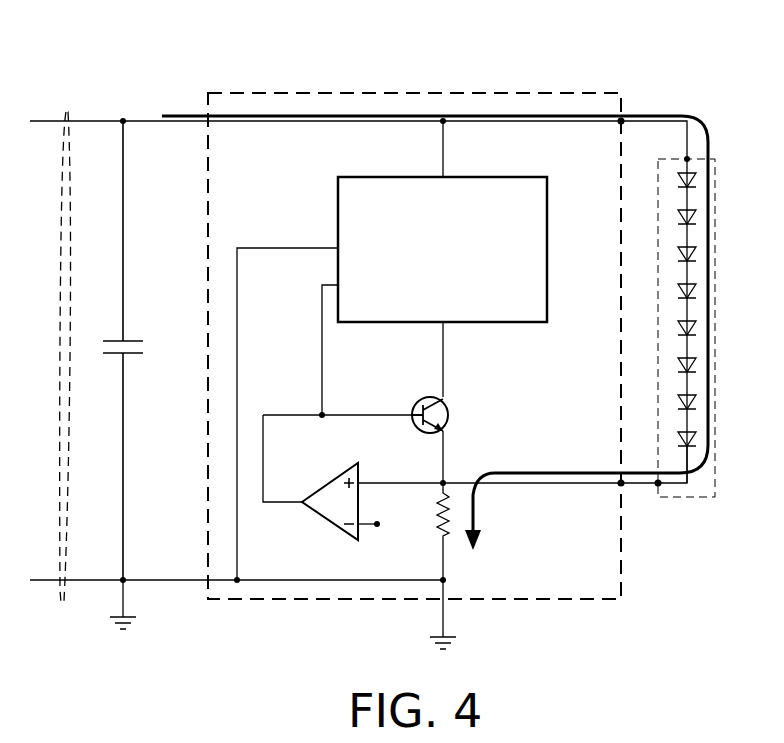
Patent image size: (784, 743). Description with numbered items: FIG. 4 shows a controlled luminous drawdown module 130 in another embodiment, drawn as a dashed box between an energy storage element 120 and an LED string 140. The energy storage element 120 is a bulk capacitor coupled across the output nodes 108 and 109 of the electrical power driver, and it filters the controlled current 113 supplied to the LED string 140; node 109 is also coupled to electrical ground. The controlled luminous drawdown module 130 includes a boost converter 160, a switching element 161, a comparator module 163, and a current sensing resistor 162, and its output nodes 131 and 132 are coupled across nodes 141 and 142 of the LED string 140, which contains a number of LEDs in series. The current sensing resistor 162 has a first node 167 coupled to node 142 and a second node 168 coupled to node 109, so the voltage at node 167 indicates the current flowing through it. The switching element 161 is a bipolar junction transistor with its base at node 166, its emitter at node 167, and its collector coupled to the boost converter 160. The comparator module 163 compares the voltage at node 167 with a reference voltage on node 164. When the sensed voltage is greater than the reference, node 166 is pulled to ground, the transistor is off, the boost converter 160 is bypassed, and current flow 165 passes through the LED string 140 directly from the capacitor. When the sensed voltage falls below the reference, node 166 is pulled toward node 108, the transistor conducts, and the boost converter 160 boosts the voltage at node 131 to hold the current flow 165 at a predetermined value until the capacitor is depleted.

The output node 108 is at (123, 120).
The output node 109 is at (121, 582).
The controlled current 113 is at (66, 108).
The energy storage element 120 is at (140, 355).
The controlled luminous drawdown module 130 is at (413, 93).
The output node 131 is at (622, 120).
The output node 132 is at (623, 486).
The LED string 140 is at (715, 310).
The node 141 is at (688, 157).
The node 142 is at (660, 486).
The boost converter 160 is at (442, 259).
The switching element 161 is at (417, 402).
The current sensing resistor 162 is at (436, 513).
The comparator module 163 is at (326, 519).
The node 164 is at (377, 530).
The current flow 165 is at (551, 472).
The node 166 is at (321, 413).
The first node 167 is at (441, 481).
The second node 168 is at (448, 580).